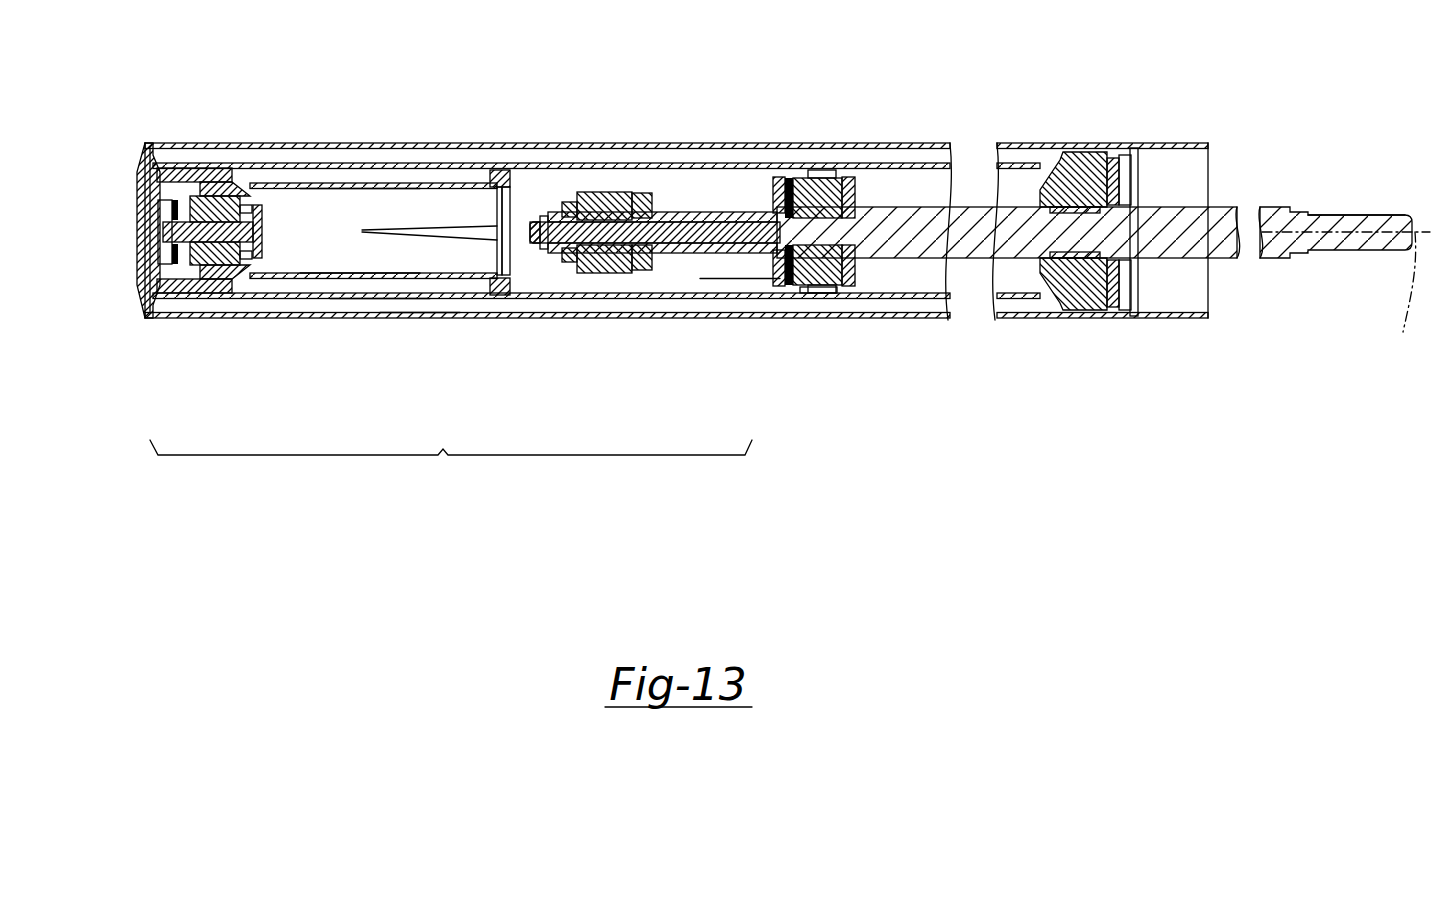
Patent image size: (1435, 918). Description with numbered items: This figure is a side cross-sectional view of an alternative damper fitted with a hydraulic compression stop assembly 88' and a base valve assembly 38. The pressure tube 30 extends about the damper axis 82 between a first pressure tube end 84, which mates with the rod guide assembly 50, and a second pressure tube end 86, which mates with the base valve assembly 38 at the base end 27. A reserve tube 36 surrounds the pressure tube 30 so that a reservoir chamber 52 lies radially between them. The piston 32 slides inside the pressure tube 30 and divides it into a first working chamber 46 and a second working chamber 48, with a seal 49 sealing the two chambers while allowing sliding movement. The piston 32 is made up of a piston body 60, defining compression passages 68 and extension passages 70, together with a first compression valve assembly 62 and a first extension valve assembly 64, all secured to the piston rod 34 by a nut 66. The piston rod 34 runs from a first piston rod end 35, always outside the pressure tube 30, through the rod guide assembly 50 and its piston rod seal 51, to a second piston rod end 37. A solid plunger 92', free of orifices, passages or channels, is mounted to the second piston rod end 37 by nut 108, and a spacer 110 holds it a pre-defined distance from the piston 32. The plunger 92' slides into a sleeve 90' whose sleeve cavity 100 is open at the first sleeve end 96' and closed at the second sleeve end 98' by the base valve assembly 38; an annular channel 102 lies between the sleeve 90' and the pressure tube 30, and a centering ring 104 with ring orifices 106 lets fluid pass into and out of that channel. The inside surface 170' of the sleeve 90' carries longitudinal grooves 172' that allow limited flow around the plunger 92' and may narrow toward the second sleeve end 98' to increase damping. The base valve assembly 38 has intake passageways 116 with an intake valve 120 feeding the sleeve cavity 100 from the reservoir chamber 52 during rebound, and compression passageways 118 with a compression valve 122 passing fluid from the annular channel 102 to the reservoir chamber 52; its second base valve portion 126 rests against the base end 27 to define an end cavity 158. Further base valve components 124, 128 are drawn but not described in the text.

The base end 27 is at (134, 218).
The pressure tube 30 is at (865, 298).
The piston 32 is at (868, 188).
The piston rod 34 is at (1196, 215).
The first piston rod end 35 is at (1395, 228).
The reserve tube 36 is at (673, 143).
The second piston rod end 37 is at (548, 242).
The base valve assembly 38 is at (272, 241).
The first working chamber 46 is at (1002, 284).
The second working chamber 48 is at (732, 280).
The seal 49 is at (818, 178).
The rod guide assembly 50 is at (1103, 160).
The piston rod seal 51 is at (1065, 180).
The reservoir chamber 52 is at (430, 312).
The piston body 60 is at (832, 180).
The first compression valve assembly 62 is at (858, 265).
The first extension valve assembly 64 is at (805, 180).
The nut 66 is at (750, 211).
The compression passages 68 is at (795, 293).
The extension passages 70 is at (800, 185).
The damper axis 82 is at (1404, 298).
The first pressure tube end 84 is at (1022, 165).
The second pressure tube end 86 is at (207, 195).
The hydraulic compression stop assembly 88' is at (451, 463).
The sleeve 90' is at (373, 231).
The solid plunger 92' is at (607, 308).
The first sleeve end 96' is at (485, 304).
The second sleeve end 98' is at (213, 354).
The sleeve cavity 100 is at (378, 205).
The annular channel 102 is at (370, 288).
The centering ring 104 is at (508, 265).
The ring orifices 106 is at (502, 180).
The nut 108 is at (537, 216).
The spacer 110 is at (718, 256).
The intake passageways 116 is at (205, 292).
The compression passageways 118 is at (212, 170).
The intake valve 120 is at (252, 172).
The compression valve 122 is at (165, 250).
The hub lower block 124 is at (230, 290).
The second base valve portion 126 is at (176, 275).
The flange 128 is at (262, 222).
The end cavity 158 is at (140, 148).
The inside surface 170' is at (360, 187).
The longitudinal grooves 172' is at (429, 157).